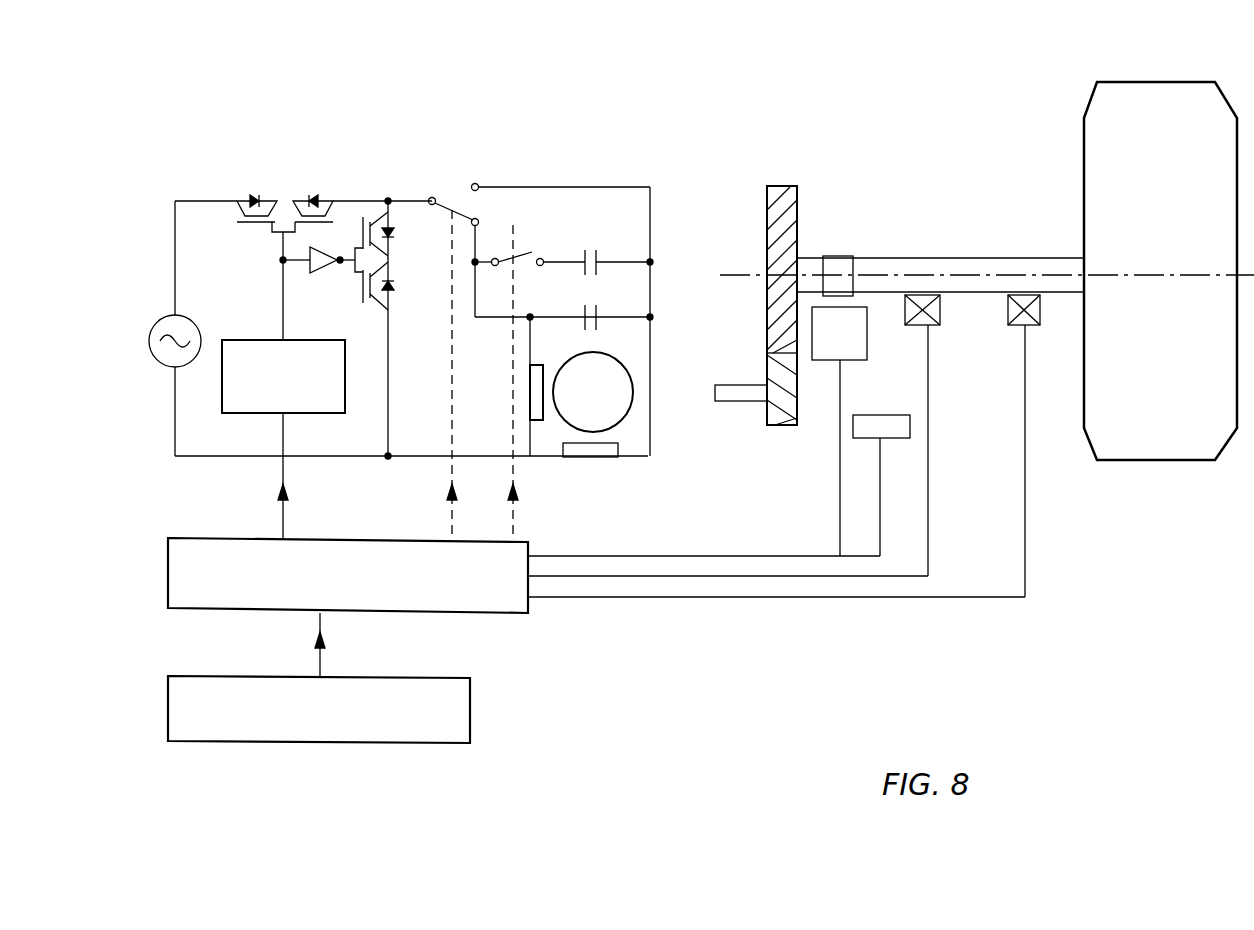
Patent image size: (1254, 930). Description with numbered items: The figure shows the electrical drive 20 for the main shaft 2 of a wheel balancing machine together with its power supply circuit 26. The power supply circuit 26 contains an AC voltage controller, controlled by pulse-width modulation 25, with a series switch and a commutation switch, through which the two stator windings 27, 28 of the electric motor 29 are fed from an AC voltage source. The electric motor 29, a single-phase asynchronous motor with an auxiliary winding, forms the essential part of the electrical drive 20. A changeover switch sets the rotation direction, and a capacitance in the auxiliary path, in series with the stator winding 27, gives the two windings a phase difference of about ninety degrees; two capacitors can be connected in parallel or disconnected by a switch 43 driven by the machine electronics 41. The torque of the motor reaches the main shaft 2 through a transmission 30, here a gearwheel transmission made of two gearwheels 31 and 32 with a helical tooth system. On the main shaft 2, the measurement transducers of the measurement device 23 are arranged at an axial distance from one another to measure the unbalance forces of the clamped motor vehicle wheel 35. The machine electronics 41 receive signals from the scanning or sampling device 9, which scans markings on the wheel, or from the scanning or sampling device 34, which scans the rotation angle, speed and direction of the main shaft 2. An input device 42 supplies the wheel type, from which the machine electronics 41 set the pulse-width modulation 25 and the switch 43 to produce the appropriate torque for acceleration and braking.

The main shaft 2 is at (917, 258).
The scanning or sampling device 9 is at (870, 422).
The electrical drive 20 is at (662, 477).
The measurement device 23 is at (1010, 325).
The pulse-width modulation 25 is at (222, 392).
The power supply circuit 26 is at (216, 146).
The stator winding 27 is at (598, 460).
The stator winding 28 is at (533, 420).
The electric motor 29 is at (633, 413).
The transmission 30 is at (815, 205).
The gearwheel 31 is at (770, 235).
The gearwheel 32 is at (767, 418).
The scanning or sampling device 34 is at (860, 340).
The motor vehicle wheel 35 is at (1092, 180).
The machine electronics 41 is at (522, 610).
The input device 42 is at (472, 712).
The switch 43 is at (516, 258).